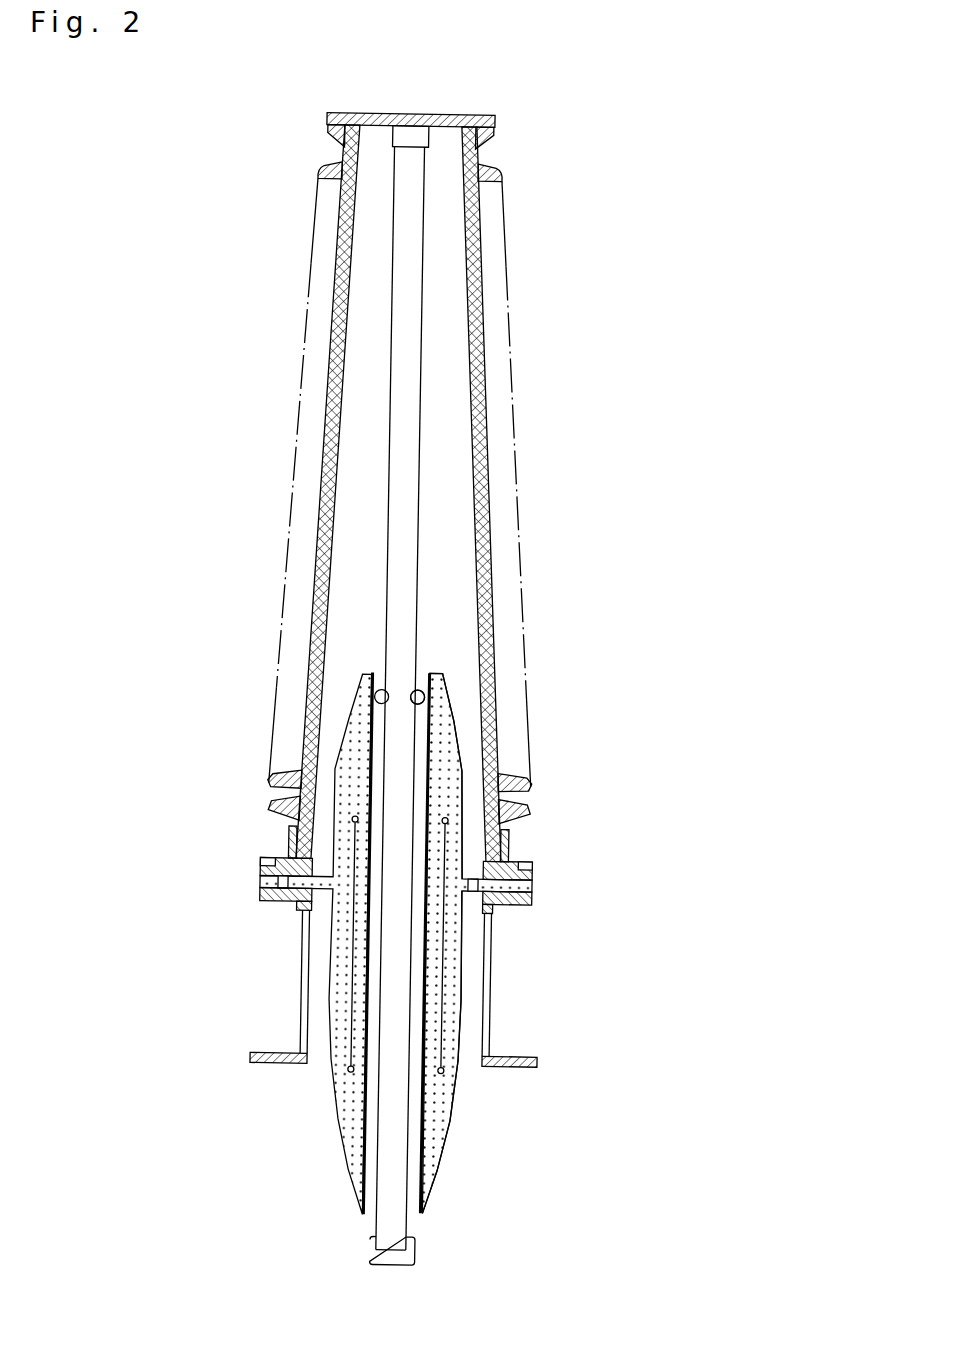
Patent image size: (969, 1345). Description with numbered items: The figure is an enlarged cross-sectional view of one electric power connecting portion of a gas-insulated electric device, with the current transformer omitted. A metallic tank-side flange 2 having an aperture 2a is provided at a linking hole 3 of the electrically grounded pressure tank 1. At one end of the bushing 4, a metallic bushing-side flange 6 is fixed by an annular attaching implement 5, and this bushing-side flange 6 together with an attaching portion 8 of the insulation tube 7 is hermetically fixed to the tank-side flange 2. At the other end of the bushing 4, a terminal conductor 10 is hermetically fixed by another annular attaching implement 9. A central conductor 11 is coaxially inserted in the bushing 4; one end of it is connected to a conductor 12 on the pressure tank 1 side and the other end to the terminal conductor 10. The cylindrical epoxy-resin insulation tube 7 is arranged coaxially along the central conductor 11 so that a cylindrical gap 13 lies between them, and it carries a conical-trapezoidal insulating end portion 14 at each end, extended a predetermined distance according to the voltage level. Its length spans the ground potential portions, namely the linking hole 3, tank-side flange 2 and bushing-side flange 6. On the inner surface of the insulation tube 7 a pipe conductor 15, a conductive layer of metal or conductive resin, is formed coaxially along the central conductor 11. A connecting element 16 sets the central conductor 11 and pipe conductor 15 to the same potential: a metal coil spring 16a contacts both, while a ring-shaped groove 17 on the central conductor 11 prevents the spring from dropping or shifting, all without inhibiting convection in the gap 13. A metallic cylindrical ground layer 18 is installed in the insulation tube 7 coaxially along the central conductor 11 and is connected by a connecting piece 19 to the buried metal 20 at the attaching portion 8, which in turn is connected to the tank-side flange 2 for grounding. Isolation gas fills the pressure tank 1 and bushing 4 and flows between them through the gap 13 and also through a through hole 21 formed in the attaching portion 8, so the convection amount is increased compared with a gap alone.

The pressure tank 1 is at (490, 932).
The tank-side flange 2 is at (265, 900).
The aperture 2a is at (310, 913).
The linking hole 3 is at (490, 1020).
The bushing 4 is at (497, 391).
The annular attaching implement 5 is at (292, 848).
The bushing-side flange 6 is at (260, 867).
The insulation tube 7 is at (442, 732).
The attaching portion 8 is at (530, 883).
The annular attaching implement 9 is at (477, 145).
The terminal conductor 10 is at (482, 118).
The central conductor 11 is at (410, 493).
The conductor 12 is at (420, 1256).
The gap 13 is at (352, 707).
The insulating end portion 14 is at (447, 695).
The pipe conductor 15 is at (378, 750).
The connecting element 16 is at (412, 690).
The coil spring 16a is at (418, 688).
The groove 17 is at (380, 688).
The ground layer 18 is at (445, 985).
The connecting piece 19 is at (328, 905).
The buried metal 20 is at (262, 885).
The through hole 21 is at (471, 880).